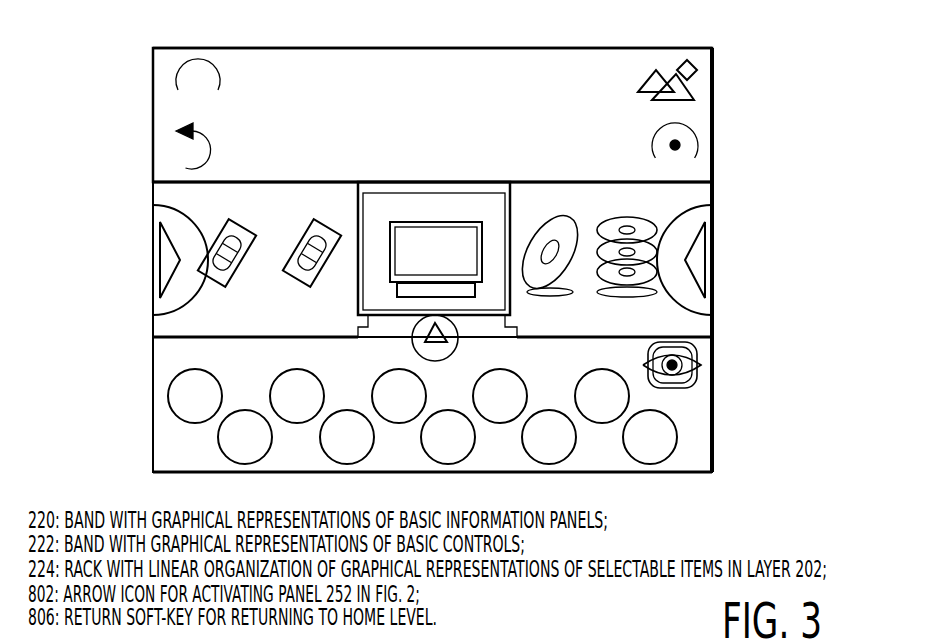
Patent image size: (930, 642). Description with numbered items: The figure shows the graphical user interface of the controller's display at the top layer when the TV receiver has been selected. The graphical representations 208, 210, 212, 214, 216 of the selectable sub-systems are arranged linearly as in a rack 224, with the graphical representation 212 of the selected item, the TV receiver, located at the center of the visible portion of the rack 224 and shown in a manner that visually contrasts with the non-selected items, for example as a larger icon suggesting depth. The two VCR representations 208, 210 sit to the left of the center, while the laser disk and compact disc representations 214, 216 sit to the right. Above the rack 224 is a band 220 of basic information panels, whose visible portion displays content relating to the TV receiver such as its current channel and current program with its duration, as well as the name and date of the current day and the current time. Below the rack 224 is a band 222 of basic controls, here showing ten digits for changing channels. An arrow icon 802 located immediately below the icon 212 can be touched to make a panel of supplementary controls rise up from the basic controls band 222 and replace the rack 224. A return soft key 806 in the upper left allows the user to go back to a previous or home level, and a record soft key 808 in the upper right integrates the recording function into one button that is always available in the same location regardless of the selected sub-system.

The graphical representation 208 is at (307, 230).
The graphical representation 210 is at (212, 280).
The graphical representation of the selected item 212 is at (405, 238).
The graphical representation 214 is at (549, 225).
The graphical representation 216 is at (643, 225).
The band with graphical representations of basic information panels 220 is at (722, 53).
The band with graphical representations of basic controls 222 is at (145, 338).
The rack 224 is at (722, 187).
The arrow icon 802 is at (440, 353).
The return soft key 806 is at (211, 147).
The record soft key 808 is at (660, 130).